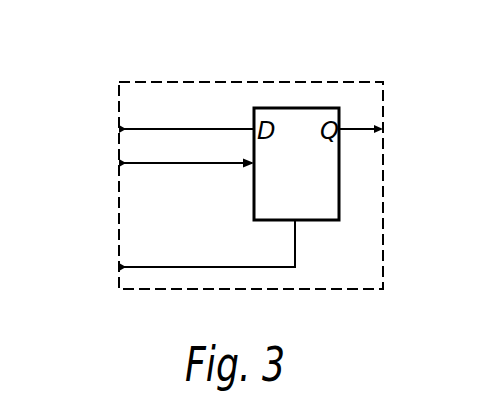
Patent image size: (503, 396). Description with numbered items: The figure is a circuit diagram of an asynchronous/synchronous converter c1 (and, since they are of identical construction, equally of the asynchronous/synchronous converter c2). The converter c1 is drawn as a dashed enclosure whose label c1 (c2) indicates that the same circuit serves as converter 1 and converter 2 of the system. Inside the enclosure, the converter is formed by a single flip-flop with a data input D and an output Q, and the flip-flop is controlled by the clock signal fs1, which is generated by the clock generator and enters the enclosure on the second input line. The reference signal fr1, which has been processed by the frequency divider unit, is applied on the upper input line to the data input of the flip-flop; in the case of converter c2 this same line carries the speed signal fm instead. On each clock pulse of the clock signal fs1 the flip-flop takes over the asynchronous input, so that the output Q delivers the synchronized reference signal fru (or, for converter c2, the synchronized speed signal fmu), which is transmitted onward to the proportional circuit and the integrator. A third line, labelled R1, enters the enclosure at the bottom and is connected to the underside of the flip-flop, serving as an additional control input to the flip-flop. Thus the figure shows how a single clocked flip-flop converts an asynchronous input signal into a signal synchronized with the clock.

The asynchronous/synchronous converter c1 is at (251, 160).
The asynchronous/synchronous converter c2 is at (270, 83).
The latch circuit c1 1 is at (251, 160).
The latch circuit c2 2 is at (251, 160).
The reference signal fr1 is at (147, 132).
The speed signal fm is at (147, 132).
The clock signal fs1 is at (158, 166).
The synchronized reference signal fru is at (416, 133).
The synchronized speed signal fmu is at (416, 133).
The reset signal R1 is at (188, 253).